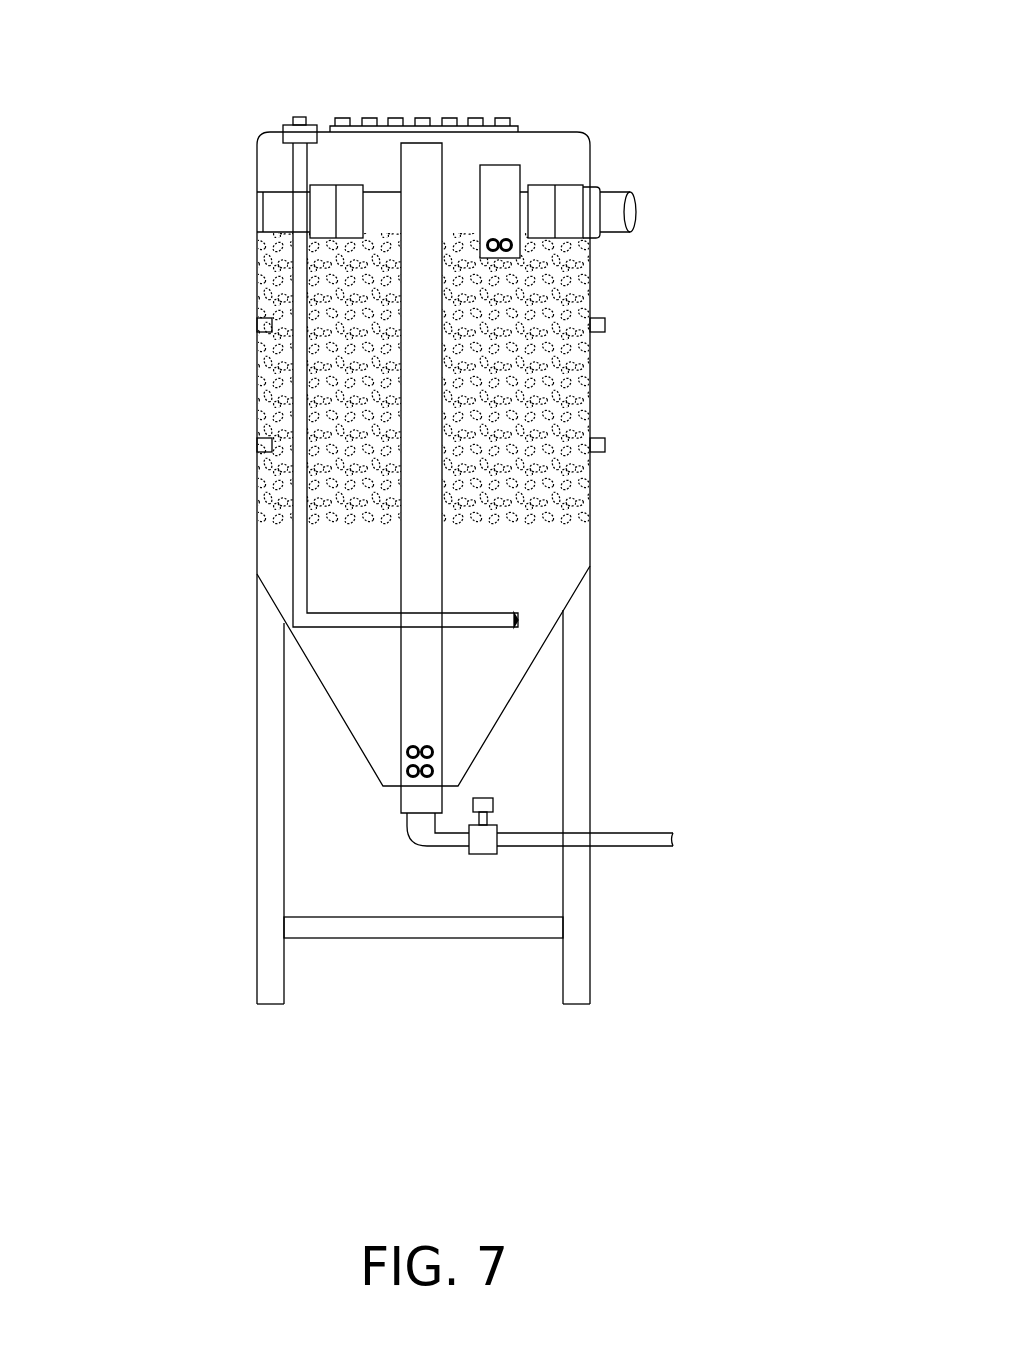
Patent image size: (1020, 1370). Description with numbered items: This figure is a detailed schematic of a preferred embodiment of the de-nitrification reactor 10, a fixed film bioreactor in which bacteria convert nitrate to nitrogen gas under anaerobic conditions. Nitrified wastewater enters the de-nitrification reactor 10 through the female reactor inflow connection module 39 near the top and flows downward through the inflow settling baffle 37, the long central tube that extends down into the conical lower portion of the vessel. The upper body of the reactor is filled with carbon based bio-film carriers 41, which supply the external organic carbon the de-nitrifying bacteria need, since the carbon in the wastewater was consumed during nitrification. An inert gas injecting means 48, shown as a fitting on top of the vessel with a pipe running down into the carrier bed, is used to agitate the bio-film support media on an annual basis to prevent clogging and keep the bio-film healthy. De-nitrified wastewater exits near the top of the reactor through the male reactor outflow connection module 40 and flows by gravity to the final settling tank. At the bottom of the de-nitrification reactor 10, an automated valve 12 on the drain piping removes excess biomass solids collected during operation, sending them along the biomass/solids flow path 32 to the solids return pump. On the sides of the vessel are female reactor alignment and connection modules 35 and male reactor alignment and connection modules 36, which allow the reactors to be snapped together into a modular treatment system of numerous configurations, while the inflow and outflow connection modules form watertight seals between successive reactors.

The de-nitrification reactor 10 is at (538, 145).
The automated valve 12 is at (497, 830).
The biomass/solids flow path to solids return pump 32 is at (660, 842).
The reactor alignment and connection module (female) 35 is at (257, 325).
The reactor alignment and connection module (male) 36 is at (605, 325).
The inflow settling baffle 37 is at (420, 549).
The reactor inflow connection module (female) 39 is at (262, 215).
The reactor outflow connection module (male) 40 is at (636, 213).
The carbon based bio-film carriers 41 is at (590, 503).
The inert gas injecting means 48 is at (300, 125).